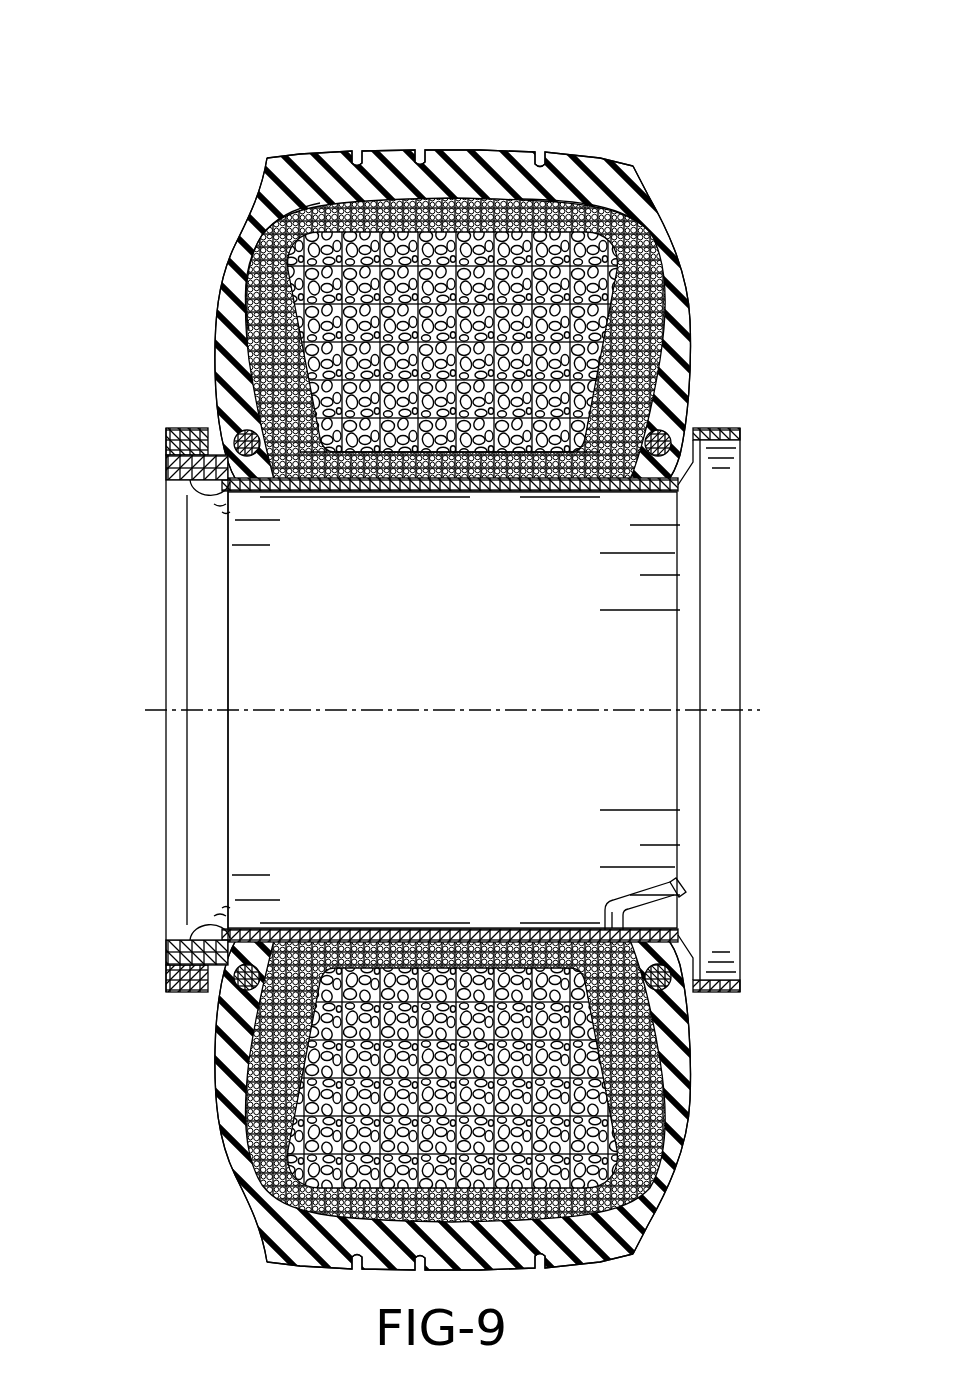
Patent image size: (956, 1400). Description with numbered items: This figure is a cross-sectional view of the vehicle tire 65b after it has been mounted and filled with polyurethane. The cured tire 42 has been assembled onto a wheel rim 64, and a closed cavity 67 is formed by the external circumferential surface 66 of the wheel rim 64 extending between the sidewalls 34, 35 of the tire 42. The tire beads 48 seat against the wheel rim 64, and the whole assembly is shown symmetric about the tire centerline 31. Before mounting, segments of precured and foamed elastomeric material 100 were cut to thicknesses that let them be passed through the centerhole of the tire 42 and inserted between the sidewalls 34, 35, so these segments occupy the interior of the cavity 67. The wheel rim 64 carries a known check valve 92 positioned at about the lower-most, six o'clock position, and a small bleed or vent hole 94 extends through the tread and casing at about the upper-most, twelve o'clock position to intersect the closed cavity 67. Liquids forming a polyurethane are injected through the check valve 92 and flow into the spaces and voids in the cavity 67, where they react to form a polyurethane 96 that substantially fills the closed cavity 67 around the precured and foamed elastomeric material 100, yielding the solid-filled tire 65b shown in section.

The vehicle tire 65b is at (163, 102).
The tire 42 is at (285, 147).
The polyurethane 96 is at (368, 224).
The hole 94 is at (578, 206).
The closed cavity 67 is at (265, 238).
The sidewall 34 is at (690, 293).
The sidewall 35 is at (215, 345).
The segments of precured and foamed elastomeric material 100 is at (575, 313).
The beads 48 is at (235, 432).
The wheel rim 64 is at (168, 480).
The external circumferential surface 66 is at (368, 458).
The tire centerline 31 is at (435, 710).
The check valve 92 is at (640, 900).